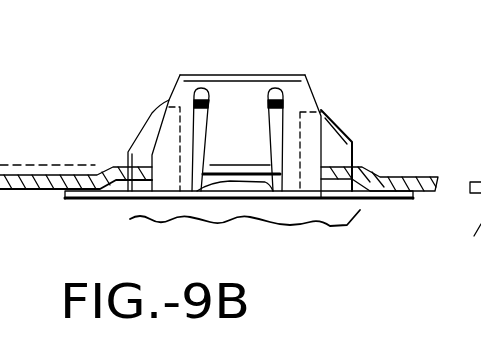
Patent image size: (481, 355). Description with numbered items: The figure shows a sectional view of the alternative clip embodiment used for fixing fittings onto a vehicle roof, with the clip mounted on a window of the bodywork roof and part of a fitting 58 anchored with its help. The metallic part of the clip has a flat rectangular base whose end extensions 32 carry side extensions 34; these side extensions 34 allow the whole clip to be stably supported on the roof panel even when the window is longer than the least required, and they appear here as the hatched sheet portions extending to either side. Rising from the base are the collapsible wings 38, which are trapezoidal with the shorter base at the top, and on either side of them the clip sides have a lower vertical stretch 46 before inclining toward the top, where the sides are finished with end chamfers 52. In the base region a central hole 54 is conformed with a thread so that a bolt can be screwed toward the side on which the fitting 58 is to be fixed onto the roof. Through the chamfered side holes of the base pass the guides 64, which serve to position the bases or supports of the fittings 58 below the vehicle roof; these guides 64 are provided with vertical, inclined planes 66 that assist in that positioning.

The end extensions 32 is at (80, 195).
The side extensions 34 is at (350, 205).
The collapsible wings 38 is at (221, 127).
The lower vertical stretch 46 is at (307, 190).
The end chamfers 52 is at (178, 82).
The central hole 54 is at (247, 188).
The fitting 58 is at (138, 214).
The guides 64 is at (130, 140).
The vertical inclined planes 66 is at (350, 137).